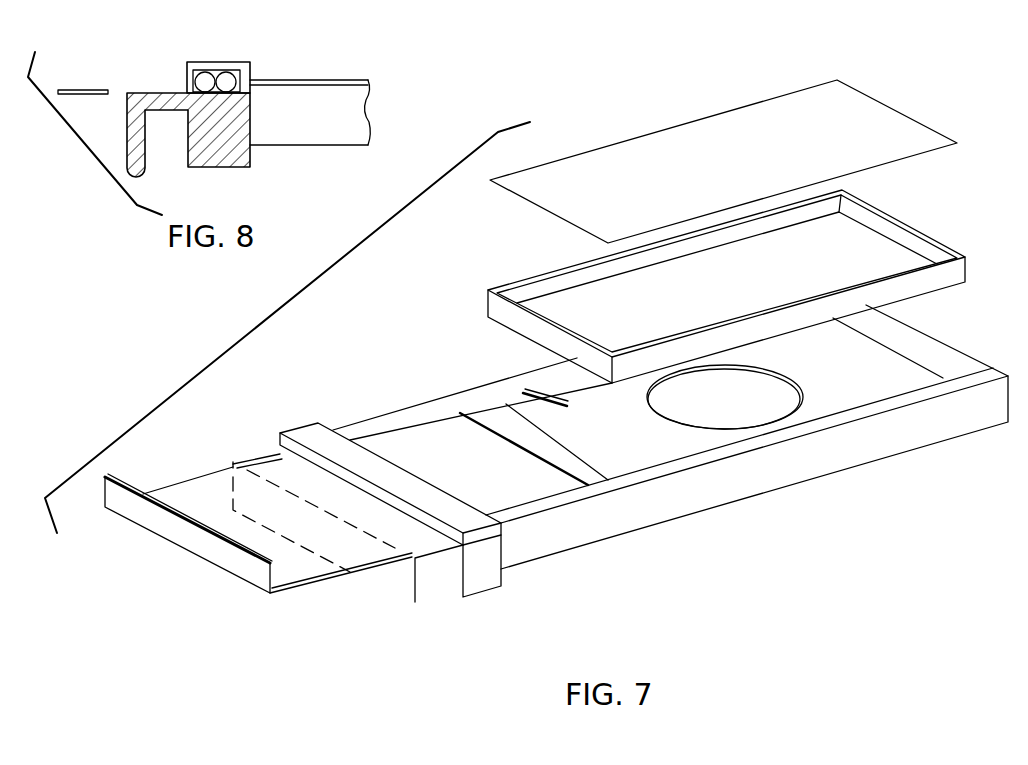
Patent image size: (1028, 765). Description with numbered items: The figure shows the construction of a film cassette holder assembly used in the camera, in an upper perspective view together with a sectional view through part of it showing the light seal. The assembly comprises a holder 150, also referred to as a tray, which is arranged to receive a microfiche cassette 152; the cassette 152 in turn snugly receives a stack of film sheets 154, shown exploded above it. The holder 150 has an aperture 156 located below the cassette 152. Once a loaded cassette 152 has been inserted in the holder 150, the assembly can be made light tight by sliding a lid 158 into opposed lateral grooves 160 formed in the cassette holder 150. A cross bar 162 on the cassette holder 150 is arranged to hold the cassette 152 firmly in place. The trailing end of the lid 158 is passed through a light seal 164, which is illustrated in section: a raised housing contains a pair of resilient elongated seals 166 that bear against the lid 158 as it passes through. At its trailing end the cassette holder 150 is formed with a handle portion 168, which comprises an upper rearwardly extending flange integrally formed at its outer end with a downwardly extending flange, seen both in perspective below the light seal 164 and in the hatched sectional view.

In FIG. 8, the holder 150 is at (310, 112).
In FIG. 7, the holder 150 is at (928, 343).
In FIG. 7, the microfiche cassette 152 is at (918, 230).
In FIG. 7, the film sheets 154 is at (897, 120).
In FIG. 7, the aperture 156 is at (772, 405).
In FIG. 8, the lid 158 is at (82, 90).
In FIG. 7, the lid 158 is at (302, 567).
In FIG. 7, the lateral grooves 160 is at (567, 407).
In FIG. 7, the cross bar 162 is at (590, 467).
In FIG. 8, the light seal 164 is at (243, 64).
In FIG. 7, the light seal 164 is at (308, 432).
In FIG. 8, the resilient elongated seals 166 is at (203, 73).
In FIG. 8, the handle portion 168 is at (205, 153).
In FIG. 7, the handle portion 168 is at (490, 572).